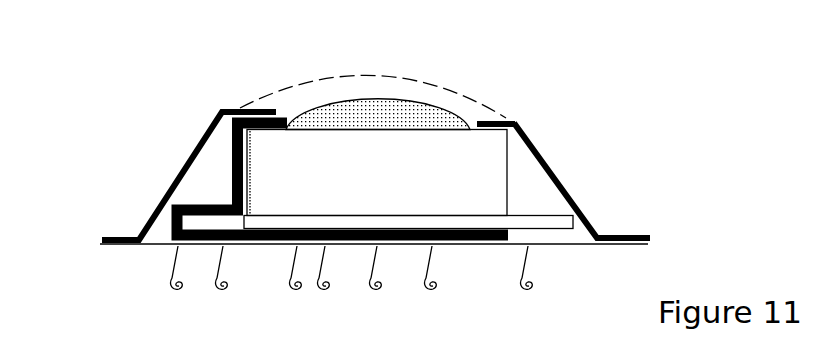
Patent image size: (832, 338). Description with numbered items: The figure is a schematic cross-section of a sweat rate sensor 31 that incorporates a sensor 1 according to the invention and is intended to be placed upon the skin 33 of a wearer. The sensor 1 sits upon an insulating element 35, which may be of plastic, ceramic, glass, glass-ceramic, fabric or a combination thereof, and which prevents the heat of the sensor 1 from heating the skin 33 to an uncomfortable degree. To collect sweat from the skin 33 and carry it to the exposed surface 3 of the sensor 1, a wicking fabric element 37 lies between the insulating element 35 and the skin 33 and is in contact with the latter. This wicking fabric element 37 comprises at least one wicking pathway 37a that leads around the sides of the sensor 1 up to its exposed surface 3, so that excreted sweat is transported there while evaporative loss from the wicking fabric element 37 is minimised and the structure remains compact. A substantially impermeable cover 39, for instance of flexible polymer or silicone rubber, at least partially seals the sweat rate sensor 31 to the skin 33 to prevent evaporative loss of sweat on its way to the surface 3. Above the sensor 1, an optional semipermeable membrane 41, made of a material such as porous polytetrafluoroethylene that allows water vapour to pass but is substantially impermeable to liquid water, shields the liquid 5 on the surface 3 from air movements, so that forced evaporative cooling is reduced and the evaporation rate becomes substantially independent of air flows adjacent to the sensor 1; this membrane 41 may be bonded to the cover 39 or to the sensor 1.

The sweat rate sensor 31 is at (122, 113).
The skin 33 is at (118, 255).
The wicking pathway 37a is at (233, 155).
The wicking fabric element 37 is at (168, 230).
The sensor 1 is at (495, 158).
The liquid 5 is at (408, 103).
The semipermeable membrane 41 is at (303, 86).
The exposed surface 3 is at (487, 121).
The impermeable cover 39 is at (587, 222).
The insulating element 35 is at (562, 220).